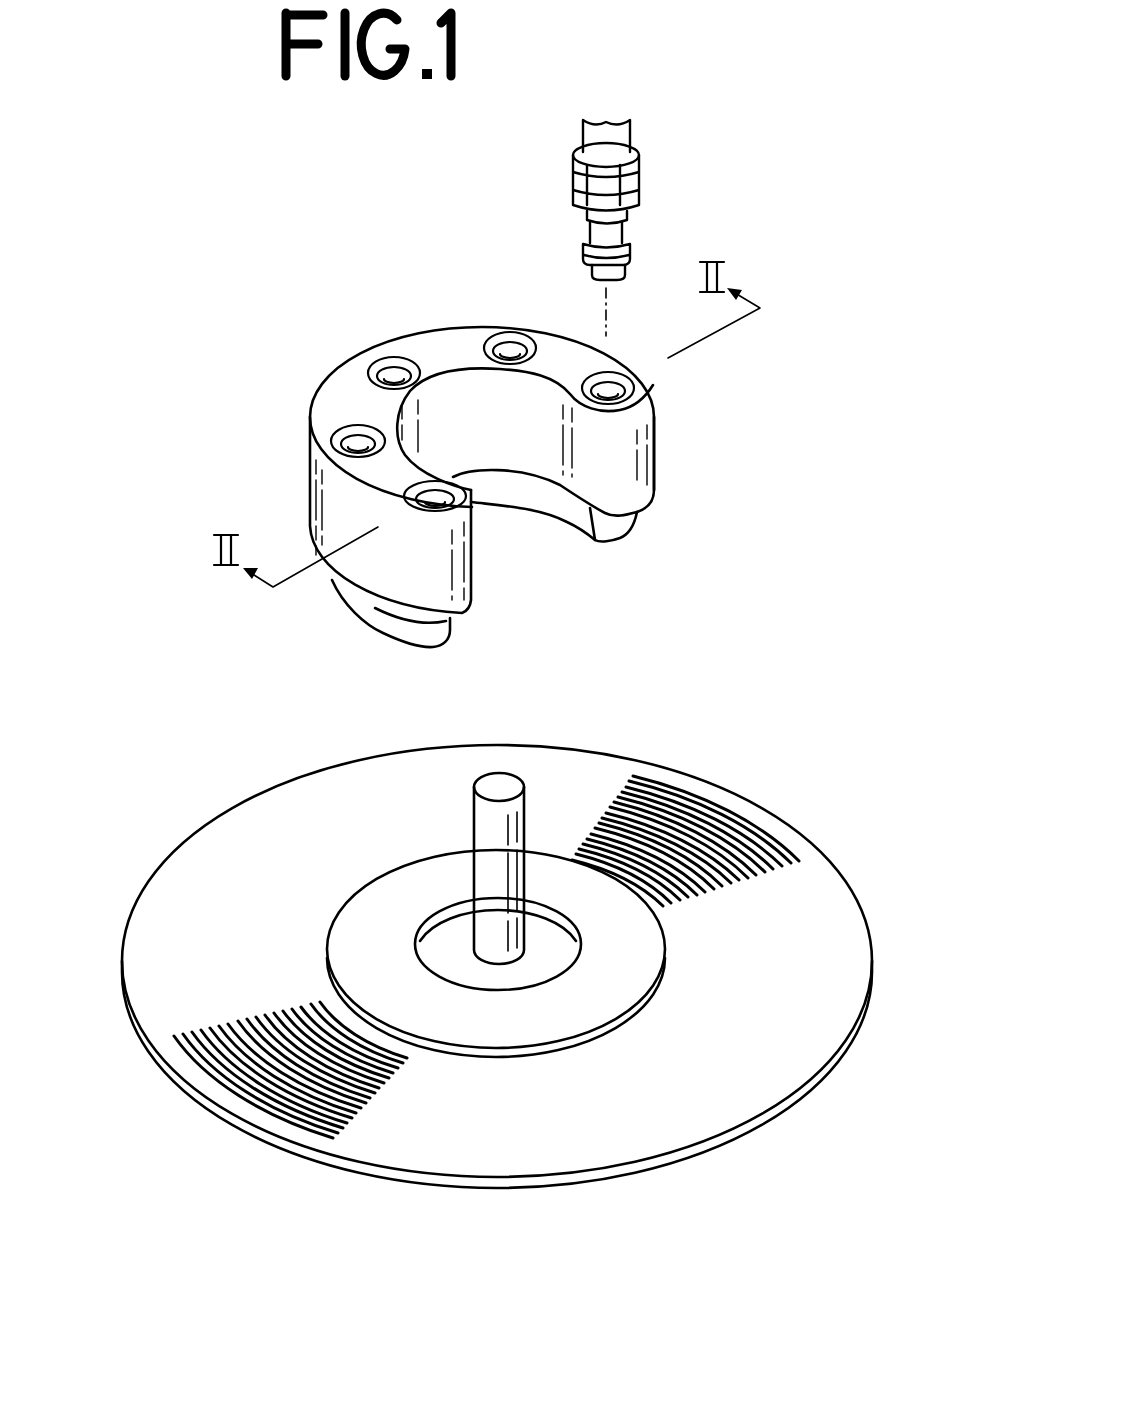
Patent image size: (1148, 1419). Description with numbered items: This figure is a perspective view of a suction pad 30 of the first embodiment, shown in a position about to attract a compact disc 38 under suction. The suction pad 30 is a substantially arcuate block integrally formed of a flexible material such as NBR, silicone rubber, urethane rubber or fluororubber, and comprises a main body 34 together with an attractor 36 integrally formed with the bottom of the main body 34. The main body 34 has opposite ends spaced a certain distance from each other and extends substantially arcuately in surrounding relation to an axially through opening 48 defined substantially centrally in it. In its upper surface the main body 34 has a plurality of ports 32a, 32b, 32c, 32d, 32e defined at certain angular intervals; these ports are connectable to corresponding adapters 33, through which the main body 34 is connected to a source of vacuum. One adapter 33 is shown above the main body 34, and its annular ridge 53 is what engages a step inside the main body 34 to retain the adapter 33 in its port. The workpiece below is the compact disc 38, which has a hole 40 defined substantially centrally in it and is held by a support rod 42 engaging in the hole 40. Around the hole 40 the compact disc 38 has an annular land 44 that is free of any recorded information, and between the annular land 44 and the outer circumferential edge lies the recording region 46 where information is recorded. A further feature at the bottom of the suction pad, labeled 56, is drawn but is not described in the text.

The suction pad 30 is at (514, 429).
The port 32a is at (641, 378).
The port 32b is at (507, 348).
The port 32c is at (392, 360).
The port 32d is at (350, 442).
The port 32e is at (503, 510).
The adapter 33 is at (661, 205).
The main body 34 is at (656, 465).
The attractor 36 is at (642, 522).
The compact disc 38 is at (516, 968).
The hole 40 is at (513, 963).
The support rod 42 is at (507, 787).
The annular land 44 is at (645, 958).
The recording region 46 is at (327, 1123).
The through opening 48 is at (462, 400).
The annular ridge 53 is at (634, 252).
The boss 56 is at (385, 625).